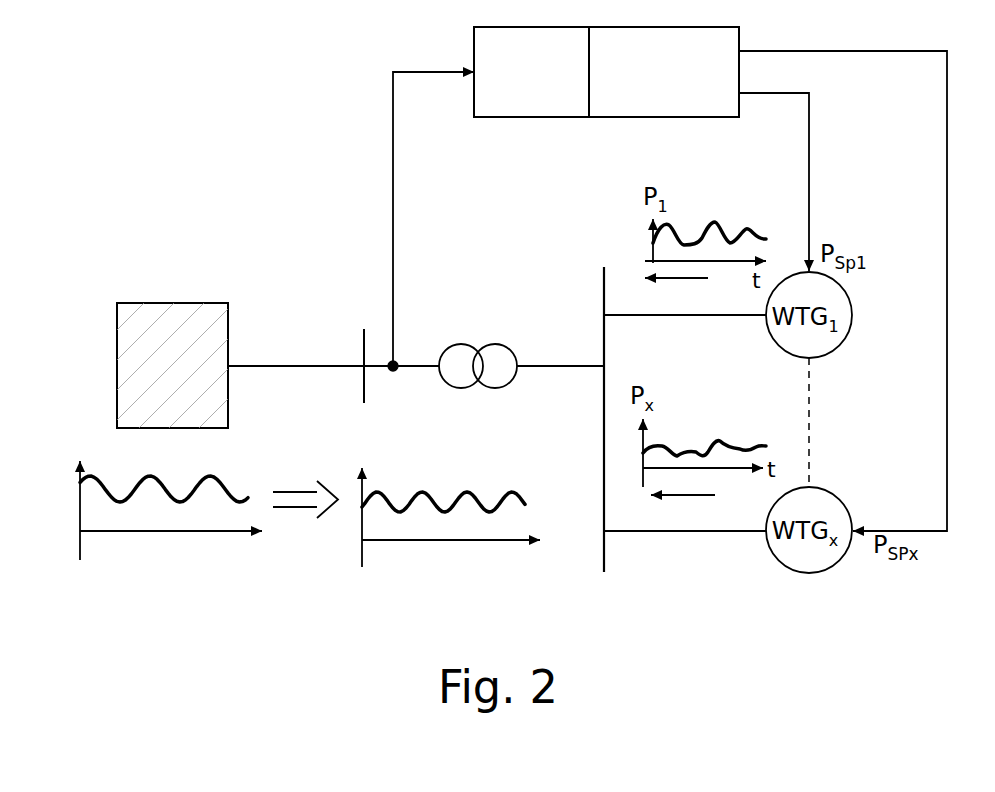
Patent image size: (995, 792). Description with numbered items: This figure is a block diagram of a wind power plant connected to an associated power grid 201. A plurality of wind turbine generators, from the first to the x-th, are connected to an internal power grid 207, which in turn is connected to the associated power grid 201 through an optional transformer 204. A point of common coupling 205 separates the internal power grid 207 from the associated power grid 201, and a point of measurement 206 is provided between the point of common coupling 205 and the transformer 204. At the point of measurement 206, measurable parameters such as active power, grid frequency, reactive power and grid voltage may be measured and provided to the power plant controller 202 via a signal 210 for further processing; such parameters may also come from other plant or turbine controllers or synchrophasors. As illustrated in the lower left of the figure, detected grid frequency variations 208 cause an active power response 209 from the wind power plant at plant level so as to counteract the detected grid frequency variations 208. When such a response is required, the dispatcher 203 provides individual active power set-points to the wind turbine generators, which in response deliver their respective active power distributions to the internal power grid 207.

The associated power grid 201 is at (172, 365).
The power plant controller 202 is at (531, 72).
The dispatcher 203 is at (664, 72).
The transformer 204 is at (484, 349).
The point of common coupling 205 is at (358, 355).
The point of measurement 206 is at (397, 358).
The internal power grid 207 is at (606, 392).
The detected grid frequency variations 208 is at (175, 534).
The active power response 209 is at (447, 543).
The signal 210 is at (393, 215).